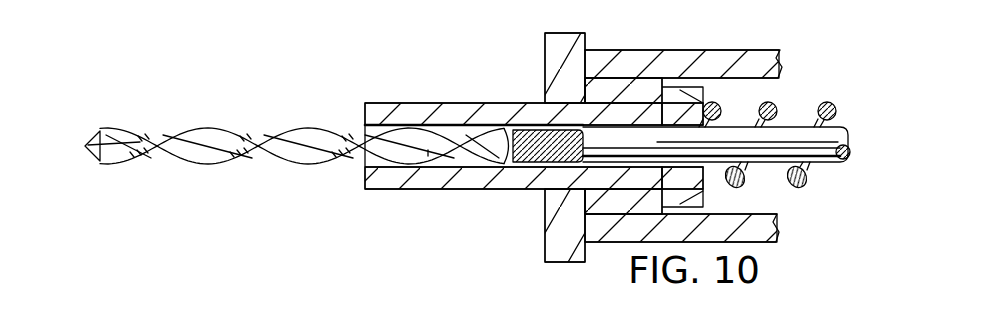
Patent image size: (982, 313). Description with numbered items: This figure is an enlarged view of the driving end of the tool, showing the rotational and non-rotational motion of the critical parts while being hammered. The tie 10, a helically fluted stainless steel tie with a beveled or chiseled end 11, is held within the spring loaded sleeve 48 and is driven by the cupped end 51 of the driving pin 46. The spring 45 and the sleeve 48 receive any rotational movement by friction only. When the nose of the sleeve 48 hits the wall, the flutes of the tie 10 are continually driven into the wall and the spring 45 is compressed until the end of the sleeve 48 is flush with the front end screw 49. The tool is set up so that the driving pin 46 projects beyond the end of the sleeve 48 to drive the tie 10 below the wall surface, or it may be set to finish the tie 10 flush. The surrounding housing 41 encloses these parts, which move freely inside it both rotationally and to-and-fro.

The tie 10 is at (189, 185).
The beveled or chiseled end 11 is at (506, 165).
The housing 41 is at (700, 50).
The spring 45 is at (778, 103).
The driving pin 46 is at (830, 141).
The spring loaded sleeve 48 is at (425, 103).
The front end screw 49 is at (544, 68).
The cupped end 51 is at (525, 167).